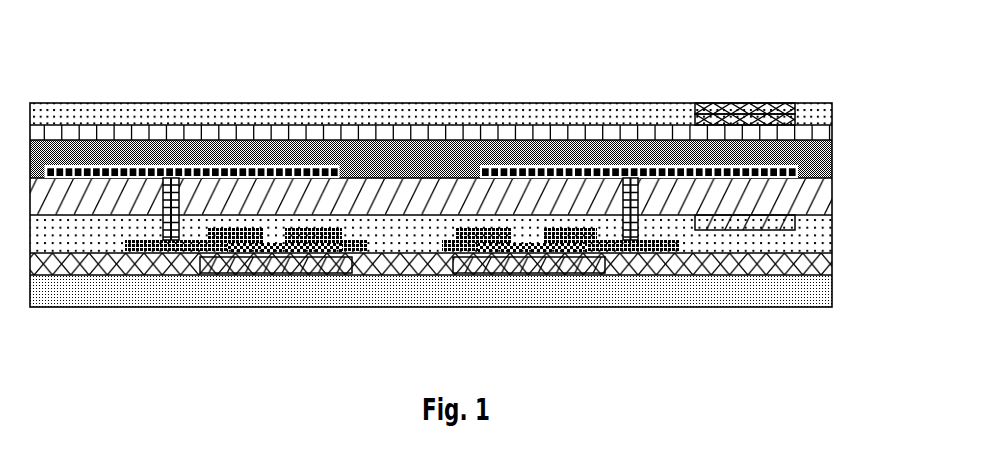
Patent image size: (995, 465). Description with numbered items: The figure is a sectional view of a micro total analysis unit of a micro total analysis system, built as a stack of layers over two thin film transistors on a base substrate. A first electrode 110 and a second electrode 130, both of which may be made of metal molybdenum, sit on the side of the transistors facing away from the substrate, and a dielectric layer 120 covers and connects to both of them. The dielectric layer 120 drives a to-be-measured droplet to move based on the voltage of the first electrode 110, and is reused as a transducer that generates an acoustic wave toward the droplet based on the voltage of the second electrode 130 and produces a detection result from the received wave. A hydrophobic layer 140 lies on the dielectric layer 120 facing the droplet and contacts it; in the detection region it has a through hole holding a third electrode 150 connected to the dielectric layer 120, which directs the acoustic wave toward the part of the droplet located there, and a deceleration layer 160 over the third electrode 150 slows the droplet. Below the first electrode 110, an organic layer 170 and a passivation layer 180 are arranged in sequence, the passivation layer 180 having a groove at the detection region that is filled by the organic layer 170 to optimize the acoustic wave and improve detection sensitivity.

The first electrode 110 is at (233, 172).
The dielectric layer 120 is at (380, 157).
The second electrode 130 is at (545, 170).
The hydrophobic layer 140 is at (78, 115).
The third electrode 150 is at (782, 123).
The deceleration layer 160 is at (725, 103).
The organic layer 170 is at (397, 197).
The passivation layer 180 is at (732, 243).